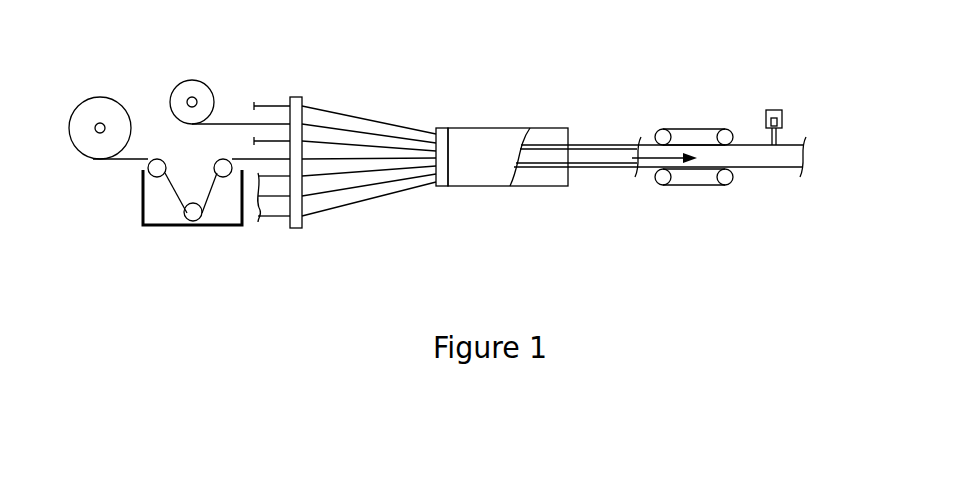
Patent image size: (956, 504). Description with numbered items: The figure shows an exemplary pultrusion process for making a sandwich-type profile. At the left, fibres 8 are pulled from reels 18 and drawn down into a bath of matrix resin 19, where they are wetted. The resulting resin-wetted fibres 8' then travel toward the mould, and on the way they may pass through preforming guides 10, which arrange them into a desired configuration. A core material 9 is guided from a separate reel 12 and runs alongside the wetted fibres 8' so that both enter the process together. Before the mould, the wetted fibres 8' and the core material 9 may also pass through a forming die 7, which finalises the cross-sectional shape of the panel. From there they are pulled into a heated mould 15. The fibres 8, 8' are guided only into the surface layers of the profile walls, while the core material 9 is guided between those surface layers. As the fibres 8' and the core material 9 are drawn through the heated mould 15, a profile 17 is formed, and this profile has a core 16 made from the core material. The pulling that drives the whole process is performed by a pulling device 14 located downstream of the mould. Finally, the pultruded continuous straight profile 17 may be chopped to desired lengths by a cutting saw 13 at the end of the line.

The forming die 7 is at (441, 130).
The fibres 8 is at (191, 208).
The resin-wetted fibres 8' is at (347, 230).
The core material 9 is at (357, 130).
The preforming guides 10 is at (297, 100).
The reel 12 is at (202, 85).
The cutting saw 13 is at (778, 107).
The pulling device 14 is at (694, 121).
The heated mould 15 is at (514, 116).
The core 16 is at (550, 160).
The profile 17 is at (745, 163).
The reels 18 is at (105, 98).
The matrix resin 19 is at (210, 213).